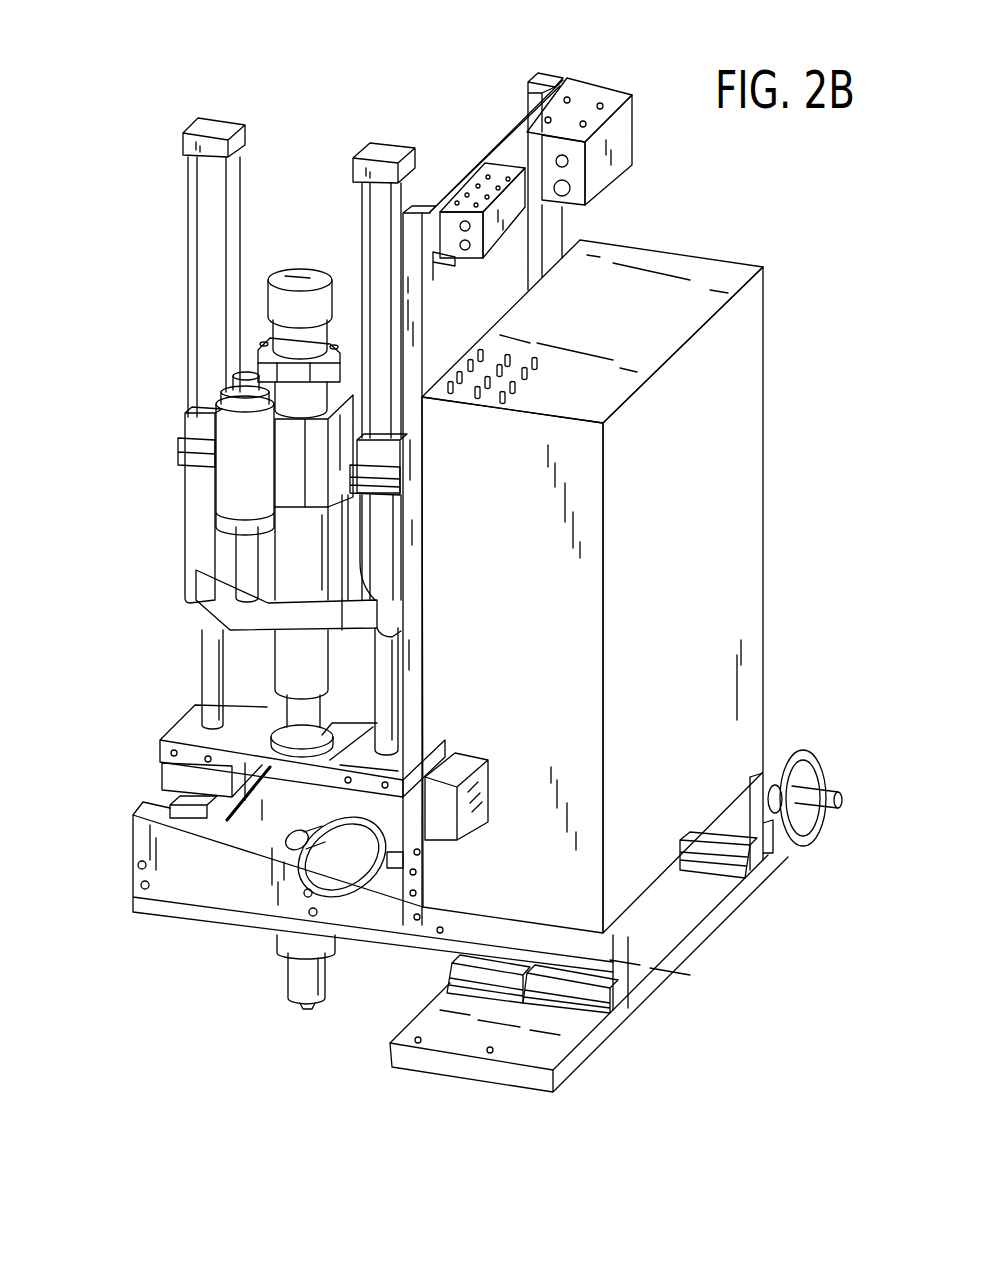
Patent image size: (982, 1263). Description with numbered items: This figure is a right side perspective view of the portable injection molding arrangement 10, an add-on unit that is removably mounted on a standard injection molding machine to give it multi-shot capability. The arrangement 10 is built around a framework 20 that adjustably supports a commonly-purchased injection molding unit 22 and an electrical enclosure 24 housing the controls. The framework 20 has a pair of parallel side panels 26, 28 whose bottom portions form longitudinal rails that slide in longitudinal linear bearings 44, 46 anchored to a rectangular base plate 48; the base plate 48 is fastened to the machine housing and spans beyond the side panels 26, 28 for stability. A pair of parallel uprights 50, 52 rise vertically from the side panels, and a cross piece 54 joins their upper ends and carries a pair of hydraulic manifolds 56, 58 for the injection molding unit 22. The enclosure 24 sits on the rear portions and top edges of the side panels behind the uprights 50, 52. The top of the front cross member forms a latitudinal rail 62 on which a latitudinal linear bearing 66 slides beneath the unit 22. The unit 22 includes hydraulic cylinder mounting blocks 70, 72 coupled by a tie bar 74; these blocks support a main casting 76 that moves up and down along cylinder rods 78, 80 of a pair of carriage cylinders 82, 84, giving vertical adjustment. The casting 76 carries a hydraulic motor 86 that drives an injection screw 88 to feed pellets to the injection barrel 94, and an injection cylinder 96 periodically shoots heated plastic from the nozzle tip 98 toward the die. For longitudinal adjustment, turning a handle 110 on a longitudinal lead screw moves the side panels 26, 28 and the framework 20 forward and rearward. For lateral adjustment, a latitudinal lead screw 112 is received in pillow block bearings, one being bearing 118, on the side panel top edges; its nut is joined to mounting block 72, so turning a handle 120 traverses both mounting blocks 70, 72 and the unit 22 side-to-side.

The portable injection molding arrangement 10 is at (448, 100).
The framework 20 is at (131, 920).
The injection molding unit 22 is at (163, 483).
The enclosure 24 is at (750, 372).
The side panel 26 is at (347, 694).
The side panel 28 is at (213, 883).
The longitudinal linear bearing 44 is at (573, 987).
The longitudinal linear bearing 46 is at (487, 977).
The base plate 48 is at (570, 1068).
The upright 50 is at (555, 232).
The upright 52 is at (430, 206).
The cross piece 54 is at (440, 265).
The hydraulic manifold 56 is at (625, 137).
The hydraulic manifold 58 is at (478, 182).
The latitudinal rail 62 is at (160, 800).
The latitudinal linear bearing 66 is at (168, 790).
The hydraulic cylinder mounting block 70 is at (178, 735).
The hydraulic cylinder mounting block 72 is at (392, 767).
The tie bar 74 is at (270, 767).
The main casting 76 is at (270, 602).
The cylinder rod 78 is at (388, 693).
The cylinder rod 80 is at (210, 676).
The carriage cylinder 82 is at (207, 257).
The carriage cylinder 84 is at (422, 336).
The hydraulic motor 86 is at (302, 270).
The injection screw 88 is at (245, 564).
The injection barrel 94 is at (308, 976).
The injection cylinder 96 is at (222, 496).
The nozzle tip 98 is at (303, 1008).
The handle 110 is at (805, 757).
The latitudinal lead screw 112 is at (433, 838).
The pillow block bearing 118 is at (422, 867).
The handle 120 is at (373, 884).